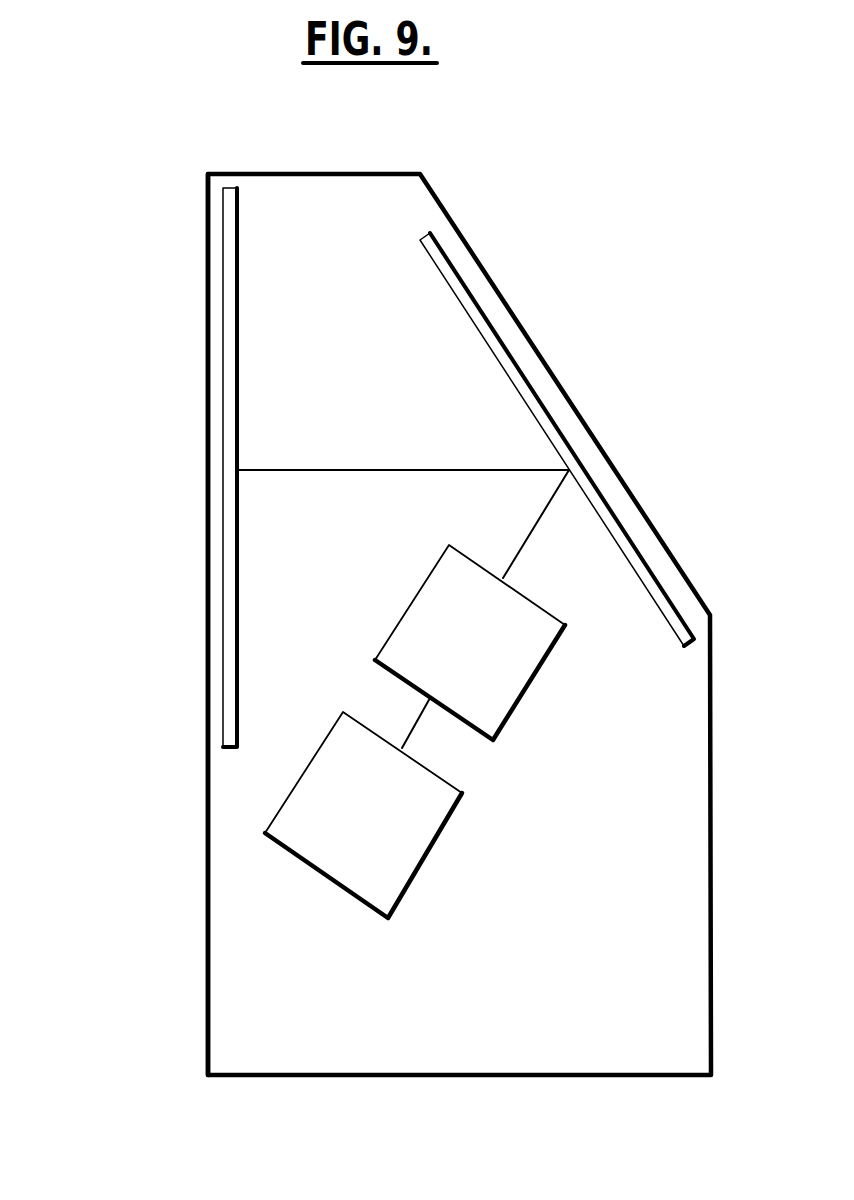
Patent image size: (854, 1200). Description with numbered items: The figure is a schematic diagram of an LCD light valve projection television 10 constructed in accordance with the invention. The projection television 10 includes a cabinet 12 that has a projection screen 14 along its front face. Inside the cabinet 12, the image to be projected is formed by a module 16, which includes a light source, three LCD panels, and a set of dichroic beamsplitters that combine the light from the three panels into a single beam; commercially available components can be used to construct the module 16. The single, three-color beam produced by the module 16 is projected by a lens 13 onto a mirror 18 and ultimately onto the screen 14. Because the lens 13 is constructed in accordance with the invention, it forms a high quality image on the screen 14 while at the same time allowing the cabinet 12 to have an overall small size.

The LCD light valve projection television 10 is at (120, 697).
The cabinet 12 is at (710, 812).
The lens 13 is at (530, 688).
The projection screen 14 is at (240, 318).
The module 16 is at (430, 858).
The mirror 18 is at (470, 320).